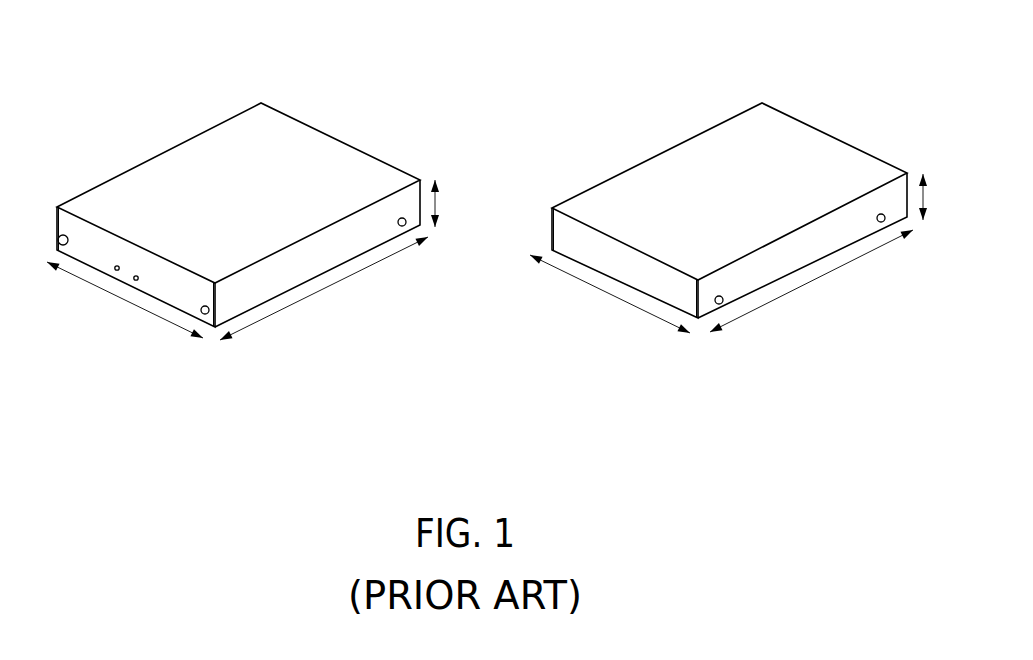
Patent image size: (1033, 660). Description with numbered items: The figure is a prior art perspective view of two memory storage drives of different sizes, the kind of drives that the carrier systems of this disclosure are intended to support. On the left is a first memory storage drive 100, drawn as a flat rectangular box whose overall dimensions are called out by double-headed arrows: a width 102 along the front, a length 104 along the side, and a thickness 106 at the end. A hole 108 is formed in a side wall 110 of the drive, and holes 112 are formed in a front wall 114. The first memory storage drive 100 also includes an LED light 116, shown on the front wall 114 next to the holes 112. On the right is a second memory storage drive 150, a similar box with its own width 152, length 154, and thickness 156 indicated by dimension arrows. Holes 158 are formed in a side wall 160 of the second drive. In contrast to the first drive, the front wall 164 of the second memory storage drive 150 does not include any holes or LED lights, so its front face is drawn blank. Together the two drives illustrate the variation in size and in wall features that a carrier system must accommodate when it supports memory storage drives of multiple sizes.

The first memory storage drive 100 is at (305, 160).
The width 102 is at (130, 303).
The length 104 is at (325, 290).
The thickness 106 is at (440, 203).
The hole 108 is at (405, 218).
The side wall 110 is at (285, 272).
The holes 112 is at (58, 238).
The front wall 114 is at (78, 237).
The LED light 116 is at (113, 265).
The second memory storage drive 150 is at (818, 153).
The width 152 is at (612, 293).
The length 154 is at (812, 280).
The thickness 156 is at (926, 194).
The holes 158 is at (886, 218).
The side wall 160 is at (833, 232).
The front wall 164 is at (592, 253).